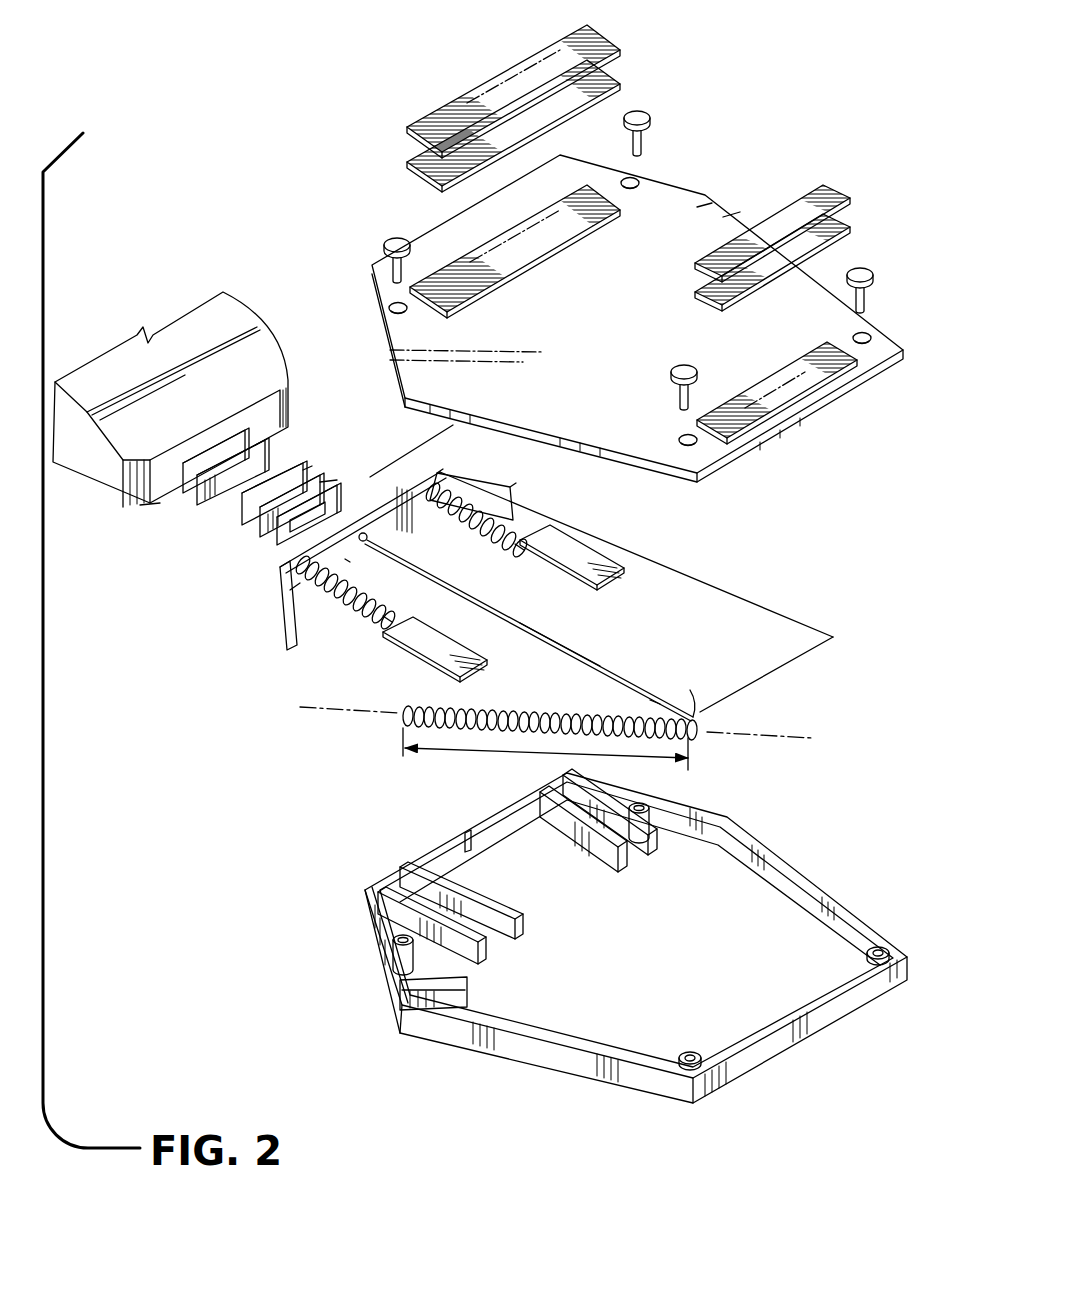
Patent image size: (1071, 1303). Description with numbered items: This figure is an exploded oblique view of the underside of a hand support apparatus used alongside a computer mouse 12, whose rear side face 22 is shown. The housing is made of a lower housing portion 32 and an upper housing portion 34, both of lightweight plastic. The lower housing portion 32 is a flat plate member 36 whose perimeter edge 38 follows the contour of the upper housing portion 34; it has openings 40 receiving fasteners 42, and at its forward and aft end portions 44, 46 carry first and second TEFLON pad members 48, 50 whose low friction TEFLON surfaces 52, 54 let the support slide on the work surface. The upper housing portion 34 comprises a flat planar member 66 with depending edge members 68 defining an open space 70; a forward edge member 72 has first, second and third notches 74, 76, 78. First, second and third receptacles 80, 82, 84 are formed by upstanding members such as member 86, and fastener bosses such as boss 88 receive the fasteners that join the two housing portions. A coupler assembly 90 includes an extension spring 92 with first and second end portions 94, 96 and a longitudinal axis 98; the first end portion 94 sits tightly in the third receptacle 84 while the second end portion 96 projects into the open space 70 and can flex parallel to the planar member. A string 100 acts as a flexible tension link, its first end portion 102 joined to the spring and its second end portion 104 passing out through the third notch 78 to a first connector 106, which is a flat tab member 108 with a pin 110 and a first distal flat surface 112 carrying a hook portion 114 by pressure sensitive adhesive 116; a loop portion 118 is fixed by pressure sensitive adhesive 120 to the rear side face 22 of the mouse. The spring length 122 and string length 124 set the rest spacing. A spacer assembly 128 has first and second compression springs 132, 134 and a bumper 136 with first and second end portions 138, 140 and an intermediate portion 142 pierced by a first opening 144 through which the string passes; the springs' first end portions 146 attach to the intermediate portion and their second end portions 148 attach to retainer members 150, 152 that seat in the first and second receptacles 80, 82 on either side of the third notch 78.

The computer mouse 12 is at (208, 305).
The rear side face 22 is at (160, 503).
The lower housing portion 32 is at (725, 215).
The upper housing portion 34 is at (609, 932).
The flat plate member 36 is at (752, 220).
The perimeter edge 38 is at (700, 205).
The openings 40 is at (395, 303).
The fasteners 42 is at (395, 242).
The forward end portion 44 is at (440, 240).
The aft end portion 46 is at (868, 357).
The first TEFLON pad member 48 is at (515, 97).
The second TEFLON pad member 50 is at (799, 225).
The low friction TEFLON surface 52 is at (528, 68).
The low friction TEFLON surface 54 is at (848, 208).
The flat planar member 66 is at (815, 945).
The edge members 68 is at (713, 823).
The open space 70 is at (725, 920).
The forward edge member 72 is at (430, 848).
The first notch 74 is at (533, 793).
The second notch 76 is at (397, 870).
The third notch 78 is at (463, 832).
The first receptacle 80 is at (588, 777).
The second receptacle 82 is at (372, 903).
The third receptacle 84 is at (430, 990).
The upstanding member 86 is at (660, 825).
The fastener boss 88 is at (881, 947).
The coupler assembly 90 is at (523, 601).
The extension spring 92 is at (524, 707).
The first end portion 94 is at (372, 708).
The second end portion 96 is at (654, 703).
The longitudinal axis 98 is at (785, 732).
The string 100 is at (602, 663).
The first end portion 102 is at (694, 712).
The second end portion 104 is at (317, 513).
The first connector 106 is at (261, 471).
The flat tab member 108 is at (337, 480).
The pin 110 is at (283, 537).
The first distal flat surface 112 is at (270, 517).
The hook portion 114 is at (257, 497).
The pressure sensitive adhesive 116 is at (312, 465).
The loop portion 118 is at (262, 437).
The pressure sensitive adhesive 120 is at (283, 393).
The spring length 122 is at (523, 752).
The string length 124 is at (455, 432).
The spacer assembly 128 is at (238, 633).
The first compression spring 132 is at (523, 537).
The second compression spring 134 is at (350, 613).
The bumper 136 is at (411, 478).
The first end portion 138 is at (503, 486).
The second end portion 140 is at (287, 625).
The intermediate portion 142 is at (392, 538).
The first opening 144 is at (347, 561).
The first end portions 146 is at (300, 582).
The second end portions 148 is at (385, 628).
The retainer member 150 is at (575, 562).
The retainer member 152 is at (470, 647).